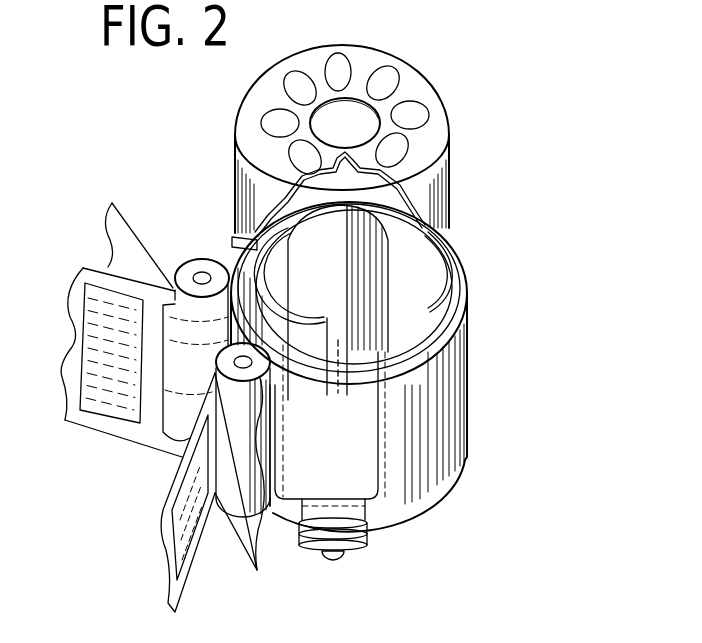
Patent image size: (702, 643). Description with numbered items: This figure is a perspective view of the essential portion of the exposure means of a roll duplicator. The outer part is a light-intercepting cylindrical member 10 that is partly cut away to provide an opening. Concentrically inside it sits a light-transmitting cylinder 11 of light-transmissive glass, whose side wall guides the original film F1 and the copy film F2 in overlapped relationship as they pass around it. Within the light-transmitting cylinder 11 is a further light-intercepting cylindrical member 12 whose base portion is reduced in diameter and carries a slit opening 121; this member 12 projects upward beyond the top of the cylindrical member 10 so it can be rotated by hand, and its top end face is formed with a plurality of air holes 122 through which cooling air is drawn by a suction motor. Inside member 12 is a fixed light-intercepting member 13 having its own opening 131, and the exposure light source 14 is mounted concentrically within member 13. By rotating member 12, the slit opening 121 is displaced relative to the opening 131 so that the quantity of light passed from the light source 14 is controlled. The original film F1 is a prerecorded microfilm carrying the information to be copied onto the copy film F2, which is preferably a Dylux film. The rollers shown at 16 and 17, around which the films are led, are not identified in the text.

The light-intercepting cylindrical member 10 is at (453, 368).
The light-transmitting cylinder 11 is at (447, 280).
The light-intercepting cylindrical member 12 is at (437, 197).
The light-intercepting member 13 is at (317, 338).
The exposure light source 14 is at (365, 262).
The upper roller 16 is at (202, 268).
The lower roller 17 is at (250, 397).
The slit opening 121 is at (346, 356).
The air holes 122 is at (393, 72).
The opening 131 is at (367, 320).
The original film F1 is at (106, 426).
The copy film F2 is at (136, 240).